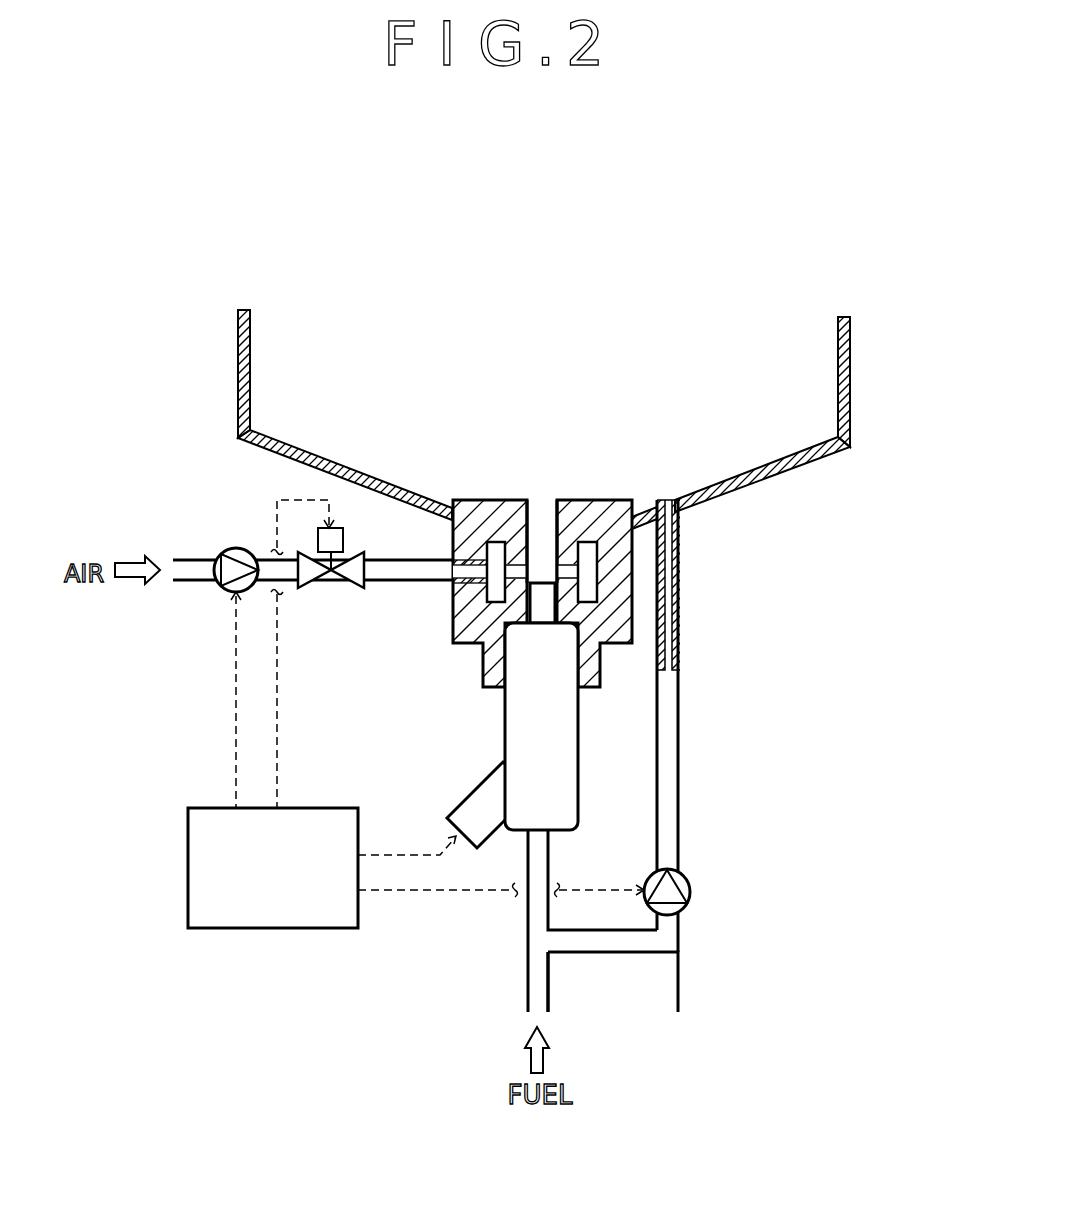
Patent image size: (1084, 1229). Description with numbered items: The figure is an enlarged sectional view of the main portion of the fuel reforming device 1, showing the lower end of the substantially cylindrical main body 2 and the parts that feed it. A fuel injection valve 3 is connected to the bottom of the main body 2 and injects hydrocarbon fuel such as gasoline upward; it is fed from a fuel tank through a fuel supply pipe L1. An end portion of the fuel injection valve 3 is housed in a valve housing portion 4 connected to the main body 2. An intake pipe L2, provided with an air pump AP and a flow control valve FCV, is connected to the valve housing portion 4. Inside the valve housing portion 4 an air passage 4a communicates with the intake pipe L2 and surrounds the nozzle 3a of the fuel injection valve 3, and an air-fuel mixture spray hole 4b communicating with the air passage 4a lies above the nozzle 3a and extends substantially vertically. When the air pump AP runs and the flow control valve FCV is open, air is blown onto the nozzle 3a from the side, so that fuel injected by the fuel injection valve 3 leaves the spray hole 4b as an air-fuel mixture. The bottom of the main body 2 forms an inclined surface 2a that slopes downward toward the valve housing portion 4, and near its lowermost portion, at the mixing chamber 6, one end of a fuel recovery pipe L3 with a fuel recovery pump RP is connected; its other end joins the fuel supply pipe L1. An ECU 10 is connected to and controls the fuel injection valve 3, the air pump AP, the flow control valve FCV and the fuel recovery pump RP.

The fuel reforming device 1 is at (295, 998).
The main body 2 is at (852, 382).
The inclined surface 2a is at (325, 460).
The fuel injection valve 3 is at (568, 770).
The nozzle 3a is at (540, 583).
The valve housing portion 4 is at (463, 637).
The air passage 4a is at (585, 573).
The air-fuel mixture spray hole 4b is at (527, 500).
The mixing chamber 6 is at (538, 358).
The ECU 10 is at (188, 862).
The air pump AP is at (237, 548).
The flow control valve FCV is at (345, 590).
The fuel supply pipe L1 is at (528, 963).
The intake pipe L2 is at (413, 583).
The fuel recovery pipe L3 is at (678, 802).
The fuel recovery pump RP is at (690, 887).